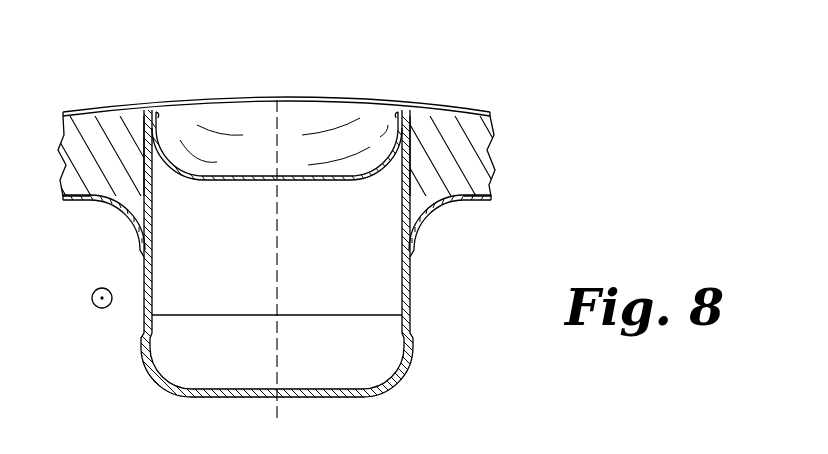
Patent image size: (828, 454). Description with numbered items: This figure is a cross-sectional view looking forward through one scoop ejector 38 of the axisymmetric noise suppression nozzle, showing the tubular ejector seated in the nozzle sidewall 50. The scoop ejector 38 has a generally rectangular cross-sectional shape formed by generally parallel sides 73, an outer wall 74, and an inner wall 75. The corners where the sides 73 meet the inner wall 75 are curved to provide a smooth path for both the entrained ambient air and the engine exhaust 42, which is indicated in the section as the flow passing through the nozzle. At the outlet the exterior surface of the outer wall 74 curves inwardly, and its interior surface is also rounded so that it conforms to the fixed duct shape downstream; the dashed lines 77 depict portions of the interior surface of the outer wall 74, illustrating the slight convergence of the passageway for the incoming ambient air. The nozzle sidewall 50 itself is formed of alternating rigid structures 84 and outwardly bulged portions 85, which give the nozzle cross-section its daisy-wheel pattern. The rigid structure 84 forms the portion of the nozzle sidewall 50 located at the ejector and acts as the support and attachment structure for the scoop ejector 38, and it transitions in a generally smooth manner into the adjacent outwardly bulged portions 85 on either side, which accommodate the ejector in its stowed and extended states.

The scoop ejector 38 is at (412, 83).
The engine exhaust 42 is at (93, 306).
The nozzle sidewall 50 is at (86, 198).
The side 73 is at (153, 236).
The outer wall 74 is at (312, 175).
The inner wall 75 is at (203, 394).
The dashed lines depicting interior surface of outer wall 77 is at (303, 361).
The rigid structure 84 is at (413, 286).
The outwardly bulged portion 85 is at (481, 200).